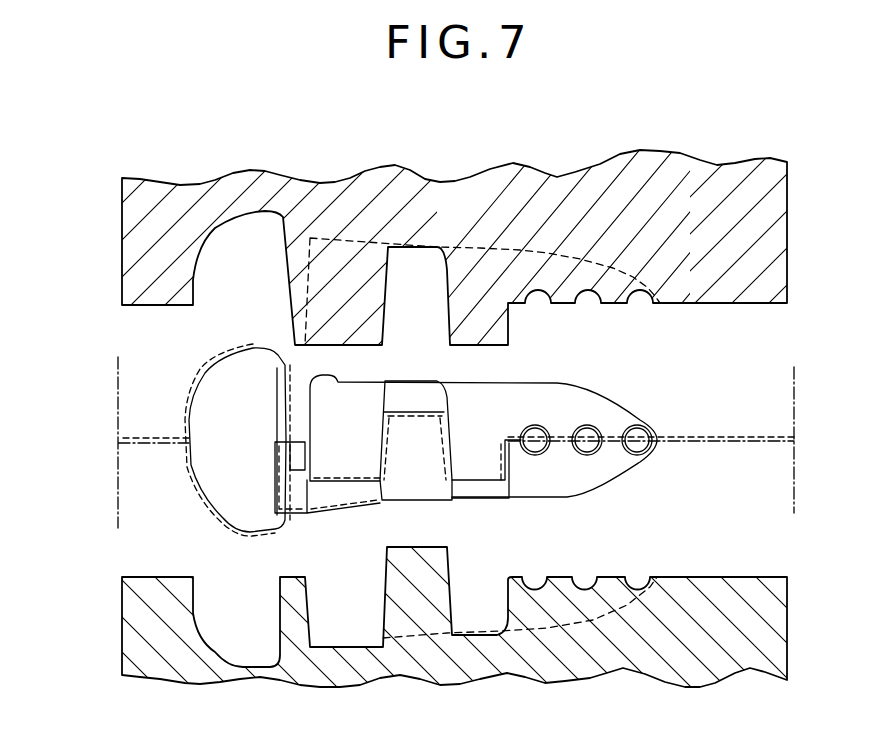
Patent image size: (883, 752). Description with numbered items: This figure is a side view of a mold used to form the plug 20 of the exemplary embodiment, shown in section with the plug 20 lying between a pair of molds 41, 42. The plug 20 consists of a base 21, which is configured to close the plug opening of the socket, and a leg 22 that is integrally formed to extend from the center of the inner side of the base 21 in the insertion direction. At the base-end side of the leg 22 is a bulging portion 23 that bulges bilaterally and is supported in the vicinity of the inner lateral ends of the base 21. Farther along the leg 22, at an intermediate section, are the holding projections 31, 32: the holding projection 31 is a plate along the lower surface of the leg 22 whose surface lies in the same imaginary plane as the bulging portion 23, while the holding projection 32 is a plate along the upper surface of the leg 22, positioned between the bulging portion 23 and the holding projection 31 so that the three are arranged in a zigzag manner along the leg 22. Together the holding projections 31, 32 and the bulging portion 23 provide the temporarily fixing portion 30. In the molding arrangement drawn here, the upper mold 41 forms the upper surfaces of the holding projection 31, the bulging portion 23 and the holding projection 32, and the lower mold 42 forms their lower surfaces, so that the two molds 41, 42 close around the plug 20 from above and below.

The plug 20 is at (516, 447).
The base 21 is at (217, 390).
The leg 22 is at (600, 396).
The bulging portion 23 is at (342, 500).
The temporarily fixing portion 30 is at (441, 446).
The holding projection 31 is at (482, 490).
The holding projection 32 is at (414, 385).
The upper mold 41 is at (118, 369).
The lower mold 42 is at (118, 601).